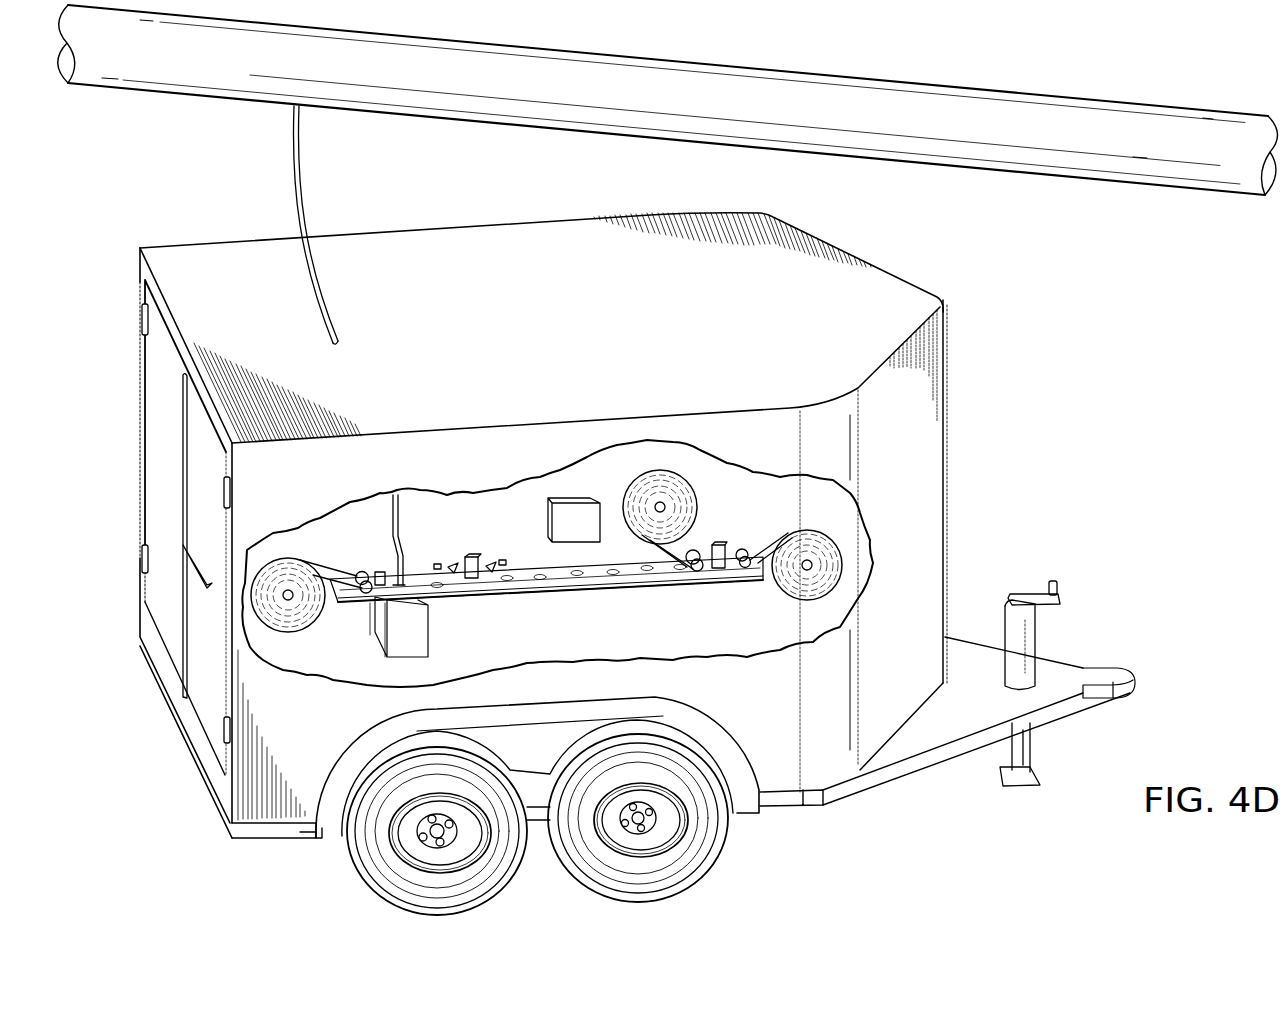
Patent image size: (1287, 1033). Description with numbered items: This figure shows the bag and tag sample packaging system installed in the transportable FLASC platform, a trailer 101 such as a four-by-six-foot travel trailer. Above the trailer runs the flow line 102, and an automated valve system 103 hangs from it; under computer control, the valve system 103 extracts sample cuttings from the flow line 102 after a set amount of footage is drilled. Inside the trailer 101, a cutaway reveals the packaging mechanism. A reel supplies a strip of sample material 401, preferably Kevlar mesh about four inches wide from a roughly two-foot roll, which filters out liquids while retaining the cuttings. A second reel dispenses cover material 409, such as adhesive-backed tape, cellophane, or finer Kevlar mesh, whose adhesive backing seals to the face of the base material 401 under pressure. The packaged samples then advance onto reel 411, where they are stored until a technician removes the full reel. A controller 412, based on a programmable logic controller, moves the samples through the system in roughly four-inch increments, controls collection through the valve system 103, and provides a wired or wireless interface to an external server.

The trailer 101 is at (218, 241).
The flow line 102 is at (1068, 98).
The automated valve system 103 is at (325, 298).
The strip of sample material 401 is at (300, 557).
The cover material 409 is at (700, 507).
The reel 411 is at (773, 590).
The controller 412 is at (545, 517).